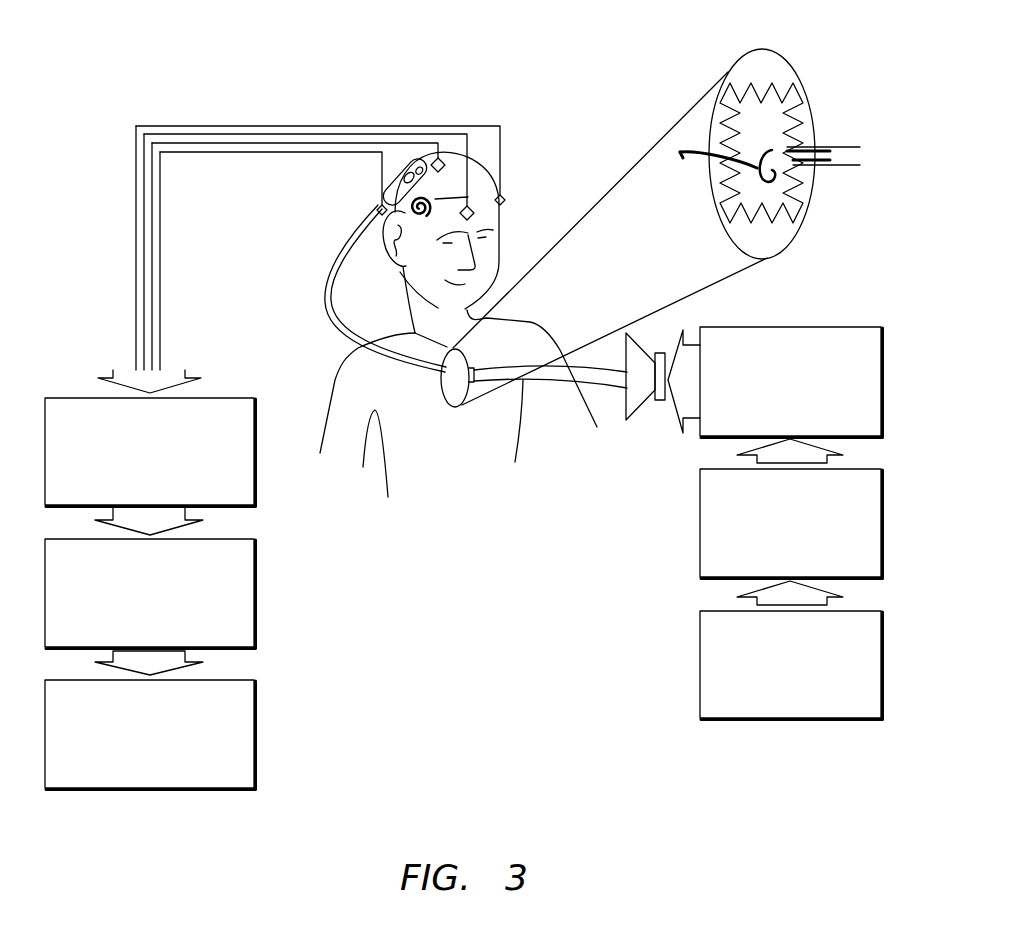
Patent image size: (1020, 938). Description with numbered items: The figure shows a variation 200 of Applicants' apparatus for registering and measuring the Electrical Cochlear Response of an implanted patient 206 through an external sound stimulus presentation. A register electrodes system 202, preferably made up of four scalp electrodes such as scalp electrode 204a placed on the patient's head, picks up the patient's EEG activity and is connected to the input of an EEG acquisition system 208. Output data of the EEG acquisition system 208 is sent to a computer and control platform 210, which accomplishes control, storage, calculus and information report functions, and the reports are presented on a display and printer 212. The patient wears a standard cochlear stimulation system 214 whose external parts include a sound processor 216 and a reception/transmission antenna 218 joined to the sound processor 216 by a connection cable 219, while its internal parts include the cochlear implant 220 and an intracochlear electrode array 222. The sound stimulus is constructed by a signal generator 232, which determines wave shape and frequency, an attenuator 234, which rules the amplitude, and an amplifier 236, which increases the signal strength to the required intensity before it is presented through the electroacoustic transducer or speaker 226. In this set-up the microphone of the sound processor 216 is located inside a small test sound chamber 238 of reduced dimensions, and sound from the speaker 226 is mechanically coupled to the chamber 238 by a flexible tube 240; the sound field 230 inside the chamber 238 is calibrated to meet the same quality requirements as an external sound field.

The apparatus set-up variation 200 is at (224, 108).
The register electrodes system 202 is at (484, 157).
The scalp electrode 204a is at (503, 203).
The implanted patient 206 is at (495, 282).
The EEG acquisition system 208 is at (60, 397).
The computer and control platform 210 is at (255, 588).
The display and printer 212 is at (255, 742).
The cochlear stimulation system 214 is at (356, 181).
The sound processor 216 is at (780, 172).
The reception/transmission antenna 218 is at (405, 158).
The connection cable 219 is at (343, 241).
The cochlear implant 220 is at (436, 160).
The intracochlear electrode array 222 is at (414, 236).
The electroacoustic transducer or speaker 226 is at (637, 398).
The sound field 230 is at (763, 116).
The signal generator 232 is at (700, 663).
The attenuator 234 is at (700, 541).
The amplifier 236 is at (836, 327).
The test sound chamber 238 is at (461, 415).
The flexible tube 240 is at (562, 385).